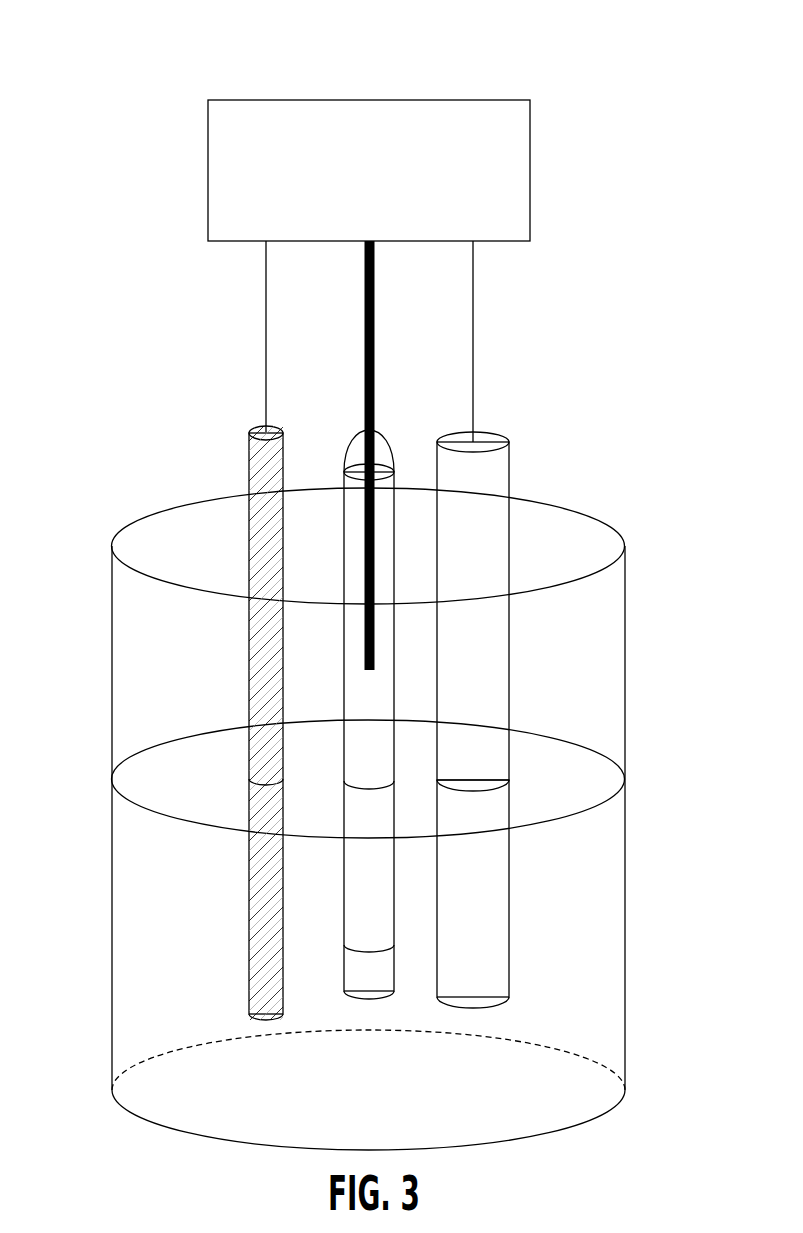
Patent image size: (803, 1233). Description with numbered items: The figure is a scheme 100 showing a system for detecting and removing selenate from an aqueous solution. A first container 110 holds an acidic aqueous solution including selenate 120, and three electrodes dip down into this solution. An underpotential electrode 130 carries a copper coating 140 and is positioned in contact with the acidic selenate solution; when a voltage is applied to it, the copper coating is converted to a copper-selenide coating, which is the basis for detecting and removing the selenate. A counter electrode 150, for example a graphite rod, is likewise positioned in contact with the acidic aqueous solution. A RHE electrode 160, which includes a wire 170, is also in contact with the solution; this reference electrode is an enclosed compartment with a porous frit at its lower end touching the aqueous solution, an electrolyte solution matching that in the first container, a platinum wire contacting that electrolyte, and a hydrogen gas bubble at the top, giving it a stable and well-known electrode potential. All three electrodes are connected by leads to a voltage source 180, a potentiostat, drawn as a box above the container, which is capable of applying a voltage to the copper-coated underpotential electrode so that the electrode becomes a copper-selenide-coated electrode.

The scheme 100 is at (600, 86).
The first container 110 is at (599, 662).
The acidic aqueous solution including selenate 120 is at (583, 1013).
The underpotential electrode 130 is at (484, 484).
The copper coating 140 is at (483, 905).
The counter electrode 150 is at (260, 872).
The RHE electrode 160 is at (345, 902).
The wire 170 is at (366, 544).
The voltage source 180 is at (503, 191).